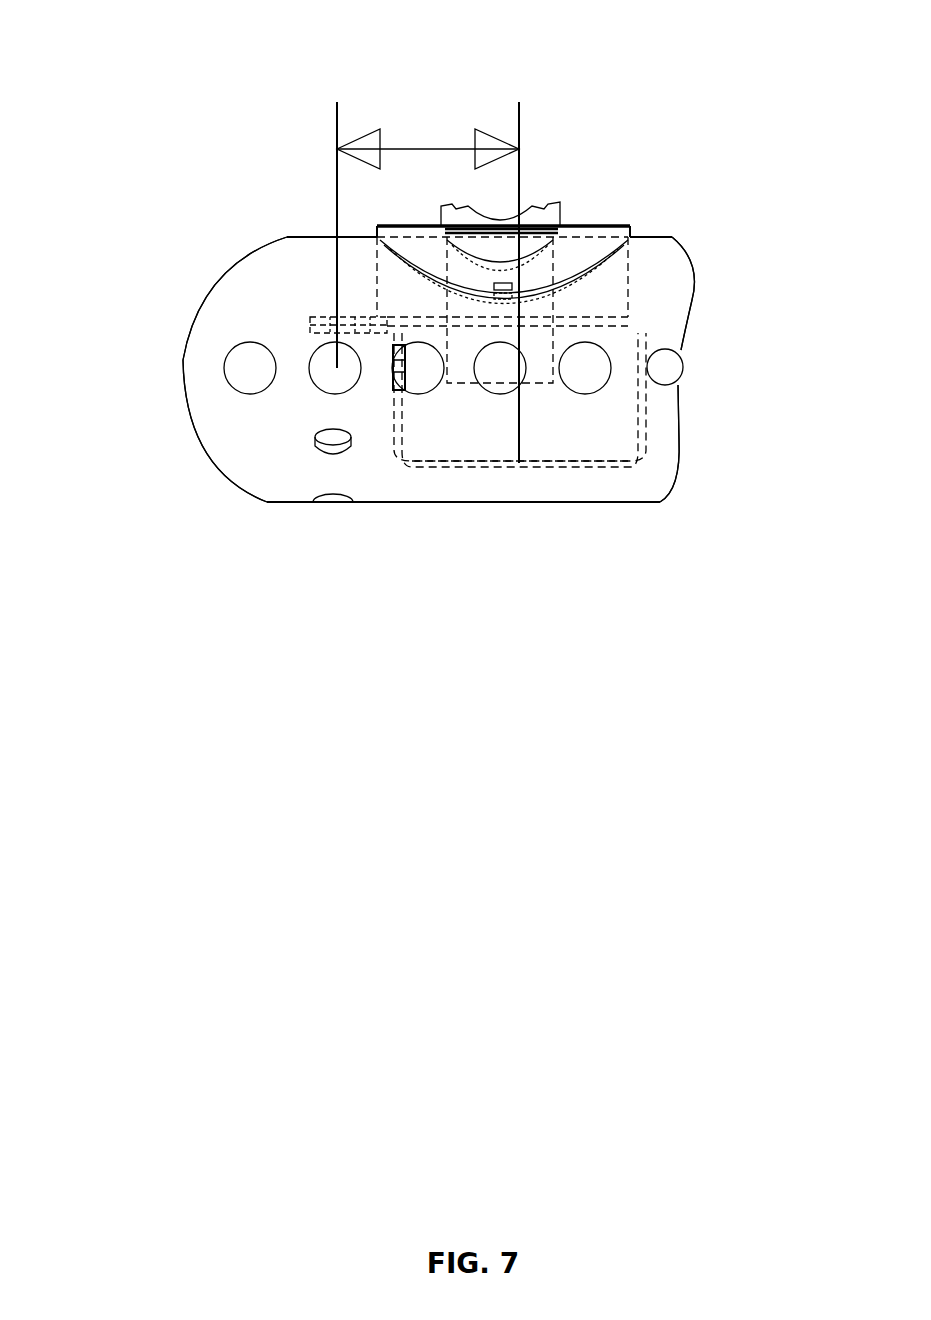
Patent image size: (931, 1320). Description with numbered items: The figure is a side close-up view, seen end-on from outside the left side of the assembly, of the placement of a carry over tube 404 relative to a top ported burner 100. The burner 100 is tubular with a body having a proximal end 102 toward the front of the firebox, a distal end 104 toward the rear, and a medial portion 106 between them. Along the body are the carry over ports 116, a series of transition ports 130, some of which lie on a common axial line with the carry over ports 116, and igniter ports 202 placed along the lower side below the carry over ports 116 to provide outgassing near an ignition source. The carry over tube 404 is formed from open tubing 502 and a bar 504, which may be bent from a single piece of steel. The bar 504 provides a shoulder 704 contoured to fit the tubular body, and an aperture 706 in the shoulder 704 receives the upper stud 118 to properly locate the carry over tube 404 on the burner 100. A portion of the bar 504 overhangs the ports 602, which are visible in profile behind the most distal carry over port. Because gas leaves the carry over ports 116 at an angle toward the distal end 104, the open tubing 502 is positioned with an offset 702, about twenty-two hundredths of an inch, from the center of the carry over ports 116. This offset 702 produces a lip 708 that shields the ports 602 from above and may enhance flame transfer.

The top ported burner 100 is at (592, 488).
The proximal end 102 is at (88, 367).
The distal end 104 is at (757, 367).
The medial portion 106 is at (515, 542).
The carry over ports 116 is at (247, 357).
The upper stud 118 is at (548, 210).
The transition ports 130 is at (665, 365).
The igniter ports 202 is at (318, 480).
The carry over tube 404 is at (462, 462).
The open tubing 502 is at (645, 437).
The bar 504 is at (637, 320).
The ports 602 is at (390, 370).
The offset 702 is at (427, 143).
The shoulder 704 is at (617, 225).
The aperture 706 is at (567, 222).
The lip 708 is at (320, 315).